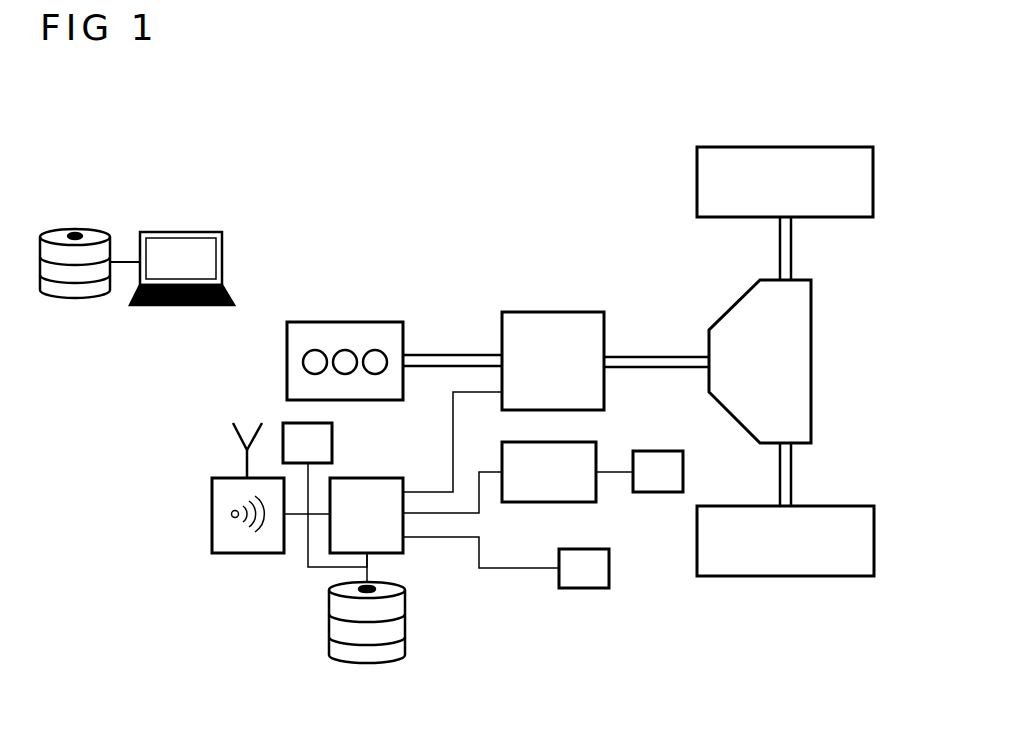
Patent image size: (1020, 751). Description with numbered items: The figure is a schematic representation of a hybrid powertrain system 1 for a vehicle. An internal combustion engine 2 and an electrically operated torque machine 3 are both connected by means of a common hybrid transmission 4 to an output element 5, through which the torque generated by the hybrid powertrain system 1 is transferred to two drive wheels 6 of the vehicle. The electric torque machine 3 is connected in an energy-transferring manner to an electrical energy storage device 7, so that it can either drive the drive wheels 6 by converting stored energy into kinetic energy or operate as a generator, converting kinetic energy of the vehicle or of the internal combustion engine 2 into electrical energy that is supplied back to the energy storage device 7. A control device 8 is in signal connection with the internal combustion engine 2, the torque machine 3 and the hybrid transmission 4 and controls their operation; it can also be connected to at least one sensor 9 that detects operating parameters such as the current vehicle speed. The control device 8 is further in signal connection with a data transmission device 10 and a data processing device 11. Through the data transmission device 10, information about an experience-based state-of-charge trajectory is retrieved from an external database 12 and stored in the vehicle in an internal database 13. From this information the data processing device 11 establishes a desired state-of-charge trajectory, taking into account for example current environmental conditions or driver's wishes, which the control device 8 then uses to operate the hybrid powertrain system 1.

The hybrid powertrain system 1 is at (866, 120).
The internal combustion engine 2 is at (344, 322).
The electrically operated torque machine 3 is at (596, 488).
The hybrid transmission 4 is at (553, 312).
The output element 5 is at (811, 357).
The drive wheels 6 is at (785, 147).
The electrical energy storage device 7 is at (658, 492).
The control device 8 is at (403, 545).
The sensor 9 is at (585, 588).
The data transmission device 10 is at (212, 514).
The data processing device 11 is at (295, 423).
The external database 12 is at (112, 310).
The internal database 13 is at (368, 656).